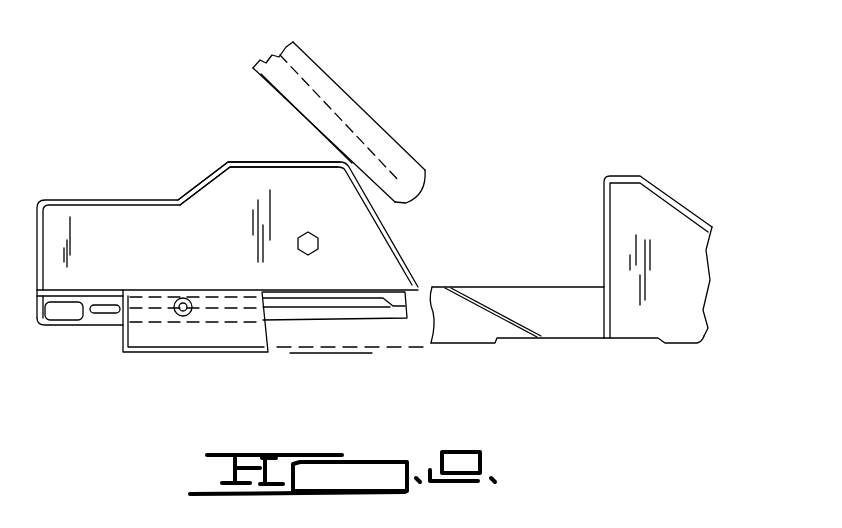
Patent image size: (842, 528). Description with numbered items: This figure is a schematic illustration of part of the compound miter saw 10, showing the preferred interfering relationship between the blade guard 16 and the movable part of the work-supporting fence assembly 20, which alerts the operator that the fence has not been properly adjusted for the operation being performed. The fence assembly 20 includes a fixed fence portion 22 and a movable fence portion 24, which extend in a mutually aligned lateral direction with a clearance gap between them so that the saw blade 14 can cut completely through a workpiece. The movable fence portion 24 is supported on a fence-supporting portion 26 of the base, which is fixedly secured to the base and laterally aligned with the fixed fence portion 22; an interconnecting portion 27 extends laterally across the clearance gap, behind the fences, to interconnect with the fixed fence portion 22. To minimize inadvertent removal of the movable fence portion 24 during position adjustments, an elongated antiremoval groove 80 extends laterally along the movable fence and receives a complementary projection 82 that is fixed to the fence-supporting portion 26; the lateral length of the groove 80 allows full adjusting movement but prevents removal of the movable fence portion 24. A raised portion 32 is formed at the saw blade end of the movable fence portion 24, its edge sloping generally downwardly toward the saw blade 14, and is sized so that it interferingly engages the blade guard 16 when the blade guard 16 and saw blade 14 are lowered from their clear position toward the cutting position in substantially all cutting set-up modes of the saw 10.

The compound miter saw 10 is at (504, 74).
The saw blade 14 is at (365, 130).
The blade guard 16 is at (330, 70).
The fence assembly 20 is at (640, 188).
The fixed fence portion 22 is at (667, 225).
The movable fence portion 24 is at (115, 227).
The fence-supporting portion 26 is at (143, 335).
The interconnecting portion 27 is at (542, 295).
The raised portion 32 is at (242, 178).
The antiremoval groove 80 is at (330, 302).
The complementary projection 82 is at (183, 318).